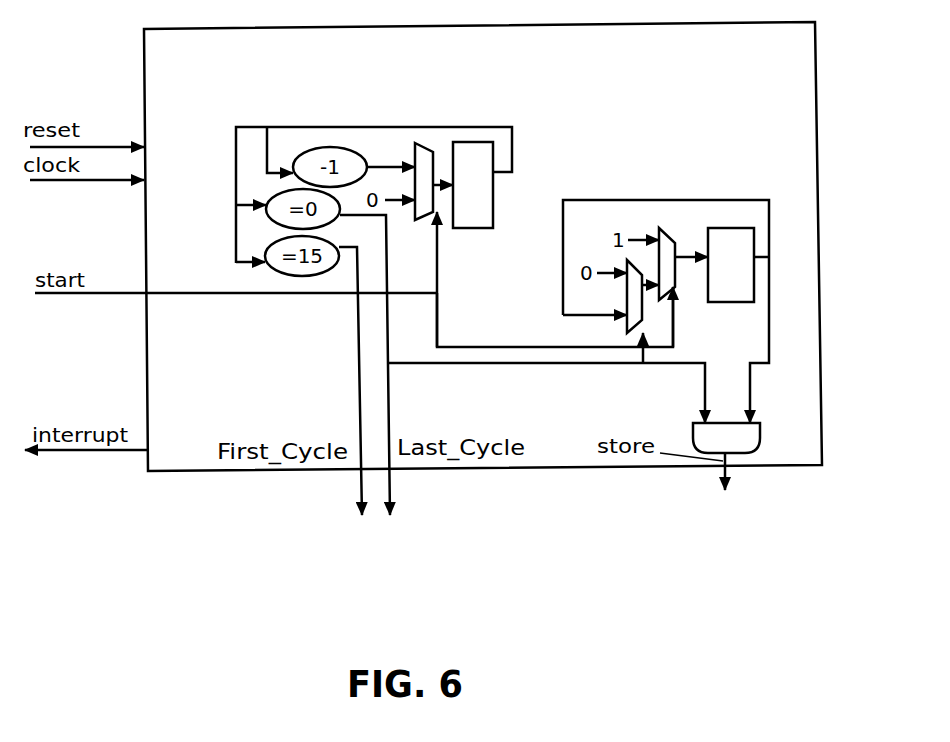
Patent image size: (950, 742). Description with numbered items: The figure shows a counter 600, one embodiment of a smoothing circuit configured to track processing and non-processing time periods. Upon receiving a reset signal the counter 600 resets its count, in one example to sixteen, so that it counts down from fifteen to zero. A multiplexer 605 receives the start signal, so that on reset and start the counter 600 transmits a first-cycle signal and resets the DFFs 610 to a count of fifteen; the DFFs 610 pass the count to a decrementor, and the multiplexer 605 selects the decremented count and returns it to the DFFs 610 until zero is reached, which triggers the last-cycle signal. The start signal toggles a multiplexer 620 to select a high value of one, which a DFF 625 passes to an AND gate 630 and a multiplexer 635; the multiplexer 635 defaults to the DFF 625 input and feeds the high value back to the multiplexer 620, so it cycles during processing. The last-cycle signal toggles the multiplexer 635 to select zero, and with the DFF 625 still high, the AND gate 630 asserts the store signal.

The counter 600 is at (661, 102).
The multiplexer 605 is at (418, 143).
The DFFs 610 is at (462, 230).
The multiplexer 620 is at (663, 231).
The DFF 625 is at (755, 290).
The AND gate 630 is at (693, 432).
The multiplexer 635 is at (627, 262).